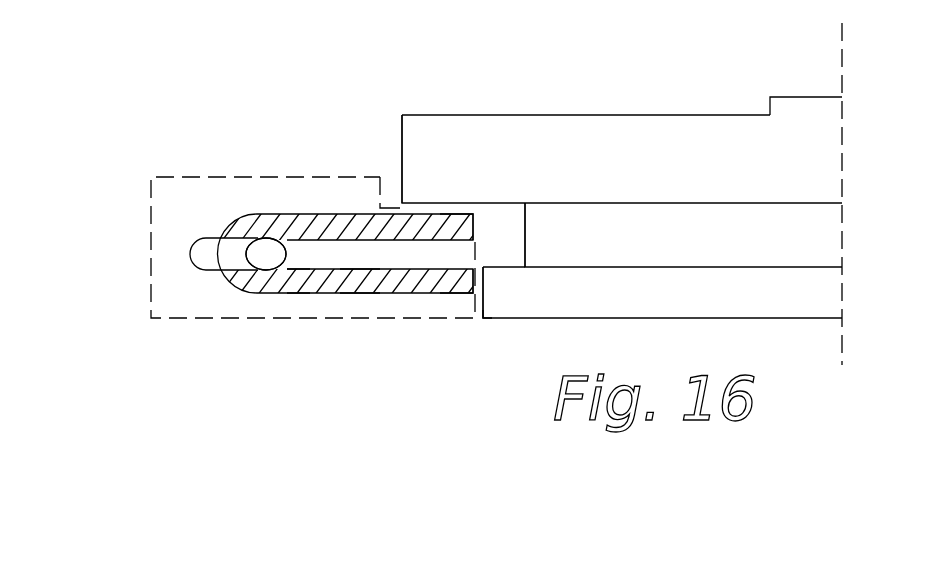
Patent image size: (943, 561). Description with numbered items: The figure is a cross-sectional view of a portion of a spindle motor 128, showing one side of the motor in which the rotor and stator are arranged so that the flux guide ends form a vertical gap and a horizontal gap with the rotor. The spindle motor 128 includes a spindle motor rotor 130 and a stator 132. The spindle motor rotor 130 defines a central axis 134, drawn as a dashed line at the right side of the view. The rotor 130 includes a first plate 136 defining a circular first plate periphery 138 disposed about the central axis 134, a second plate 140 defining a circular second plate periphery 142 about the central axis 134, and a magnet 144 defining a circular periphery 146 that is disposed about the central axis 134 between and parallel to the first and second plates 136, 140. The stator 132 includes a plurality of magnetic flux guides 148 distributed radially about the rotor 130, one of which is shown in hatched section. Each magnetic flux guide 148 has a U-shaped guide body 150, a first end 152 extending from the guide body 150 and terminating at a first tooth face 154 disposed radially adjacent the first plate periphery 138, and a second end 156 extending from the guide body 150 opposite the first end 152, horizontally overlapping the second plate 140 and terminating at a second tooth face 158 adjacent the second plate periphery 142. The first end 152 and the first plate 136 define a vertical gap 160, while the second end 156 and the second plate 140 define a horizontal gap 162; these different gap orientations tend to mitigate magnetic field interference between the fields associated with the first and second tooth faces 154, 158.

The spindle motor 128 is at (147, 100).
The spindle motor rotor 130 is at (636, 177).
The stator 132 is at (166, 177).
The central axis 134 is at (838, 60).
The first plate 136 is at (734, 308).
The first plate periphery 138 is at (486, 298).
The second plate 140 is at (746, 173).
The second plate periphery 142 is at (404, 158).
The magnet 144 is at (750, 250).
The circular periphery 146 is at (529, 243).
The magnetic flux guide 148 is at (292, 214).
The U-shaped guide body 150 is at (238, 274).
The first end 152 is at (356, 292).
The first tooth face 154 is at (467, 281).
The second end 156 is at (294, 286).
The second tooth face 158 is at (468, 225).
The vertical gap 160 is at (482, 323).
The horizontal gap 162 is at (391, 207).